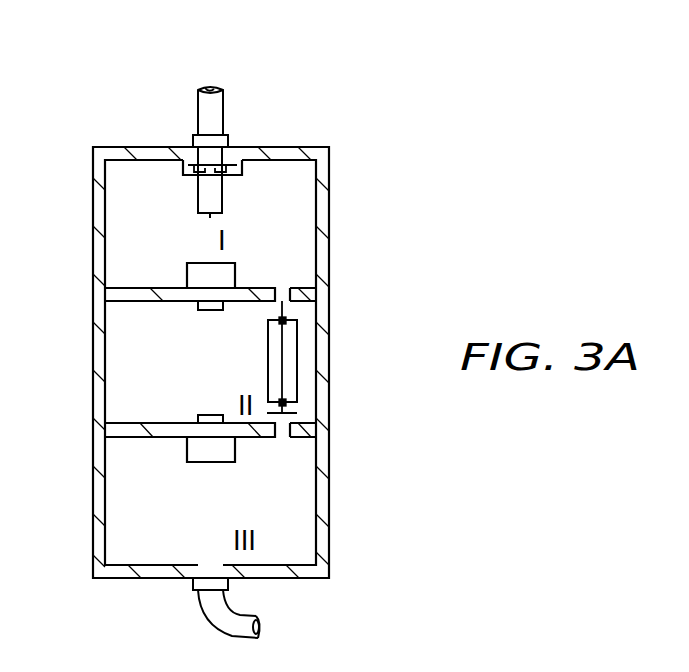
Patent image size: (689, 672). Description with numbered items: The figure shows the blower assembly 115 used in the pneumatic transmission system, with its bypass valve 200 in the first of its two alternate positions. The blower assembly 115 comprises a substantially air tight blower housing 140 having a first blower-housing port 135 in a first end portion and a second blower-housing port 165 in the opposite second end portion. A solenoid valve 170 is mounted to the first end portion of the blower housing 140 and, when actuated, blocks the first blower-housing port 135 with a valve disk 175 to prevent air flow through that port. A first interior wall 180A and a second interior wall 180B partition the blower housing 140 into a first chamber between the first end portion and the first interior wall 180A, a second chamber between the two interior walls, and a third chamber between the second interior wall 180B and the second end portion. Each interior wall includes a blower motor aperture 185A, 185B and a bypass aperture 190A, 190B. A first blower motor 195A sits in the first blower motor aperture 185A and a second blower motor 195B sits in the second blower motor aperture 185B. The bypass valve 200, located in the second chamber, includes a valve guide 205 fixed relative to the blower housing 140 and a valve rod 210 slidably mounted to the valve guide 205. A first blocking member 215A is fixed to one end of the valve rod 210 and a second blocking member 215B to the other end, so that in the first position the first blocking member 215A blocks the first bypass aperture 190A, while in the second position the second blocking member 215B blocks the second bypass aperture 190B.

The blower assembly 115 is at (125, 83).
The first blower-housing port 135 is at (193, 140).
The blower housing 140 is at (93, 518).
The second blower-housing port 165 is at (193, 587).
The solenoid valve 170 is at (198, 206).
The valve disk 175 is at (205, 172).
The first interior wall 180A is at (142, 302).
The second interior wall 180B is at (153, 437).
The first blower motor aperture 185A is at (213, 310).
The second blower motor aperture 185B is at (205, 420).
The first bypass aperture 190A is at (281, 288).
The second bypass aperture 190B is at (282, 437).
The first blower motor 195A is at (187, 272).
The second blower motor 195B is at (206, 463).
The bypass valve 200 is at (258, 372).
The valve guide 205 is at (298, 376).
The valve rod 210 is at (286, 336).
The first blocking member 215A is at (310, 302).
The second blocking member 215B is at (306, 405).